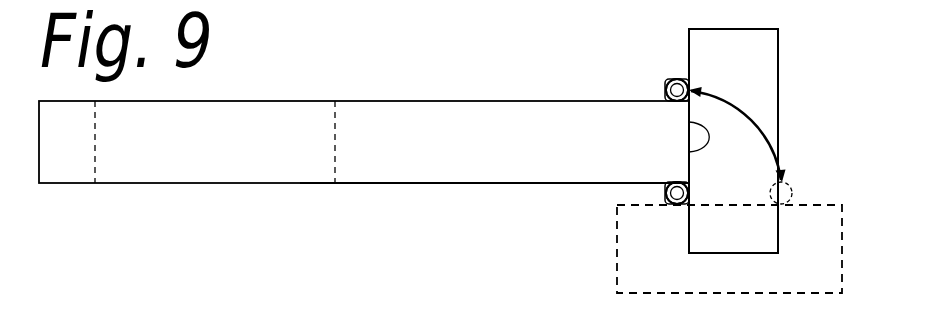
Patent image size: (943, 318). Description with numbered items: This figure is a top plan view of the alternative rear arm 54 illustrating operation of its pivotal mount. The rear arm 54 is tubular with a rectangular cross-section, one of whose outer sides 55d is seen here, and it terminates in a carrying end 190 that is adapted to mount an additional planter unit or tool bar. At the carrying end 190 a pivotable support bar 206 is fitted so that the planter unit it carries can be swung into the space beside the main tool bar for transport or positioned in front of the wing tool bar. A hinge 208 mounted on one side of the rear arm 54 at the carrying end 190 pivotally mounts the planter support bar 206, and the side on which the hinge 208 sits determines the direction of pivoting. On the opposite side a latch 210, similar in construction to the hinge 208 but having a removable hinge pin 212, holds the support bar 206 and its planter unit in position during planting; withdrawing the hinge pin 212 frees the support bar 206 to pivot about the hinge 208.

The rear arm 54 is at (408, 97).
The outer side 55d is at (443, 184).
The carrying end 190 is at (689, 148).
The pivotable support bar 206 is at (760, 72).
The hinge 208 is at (665, 205).
The latch 210 is at (672, 82).
The removable hinge pin 212 is at (667, 87).